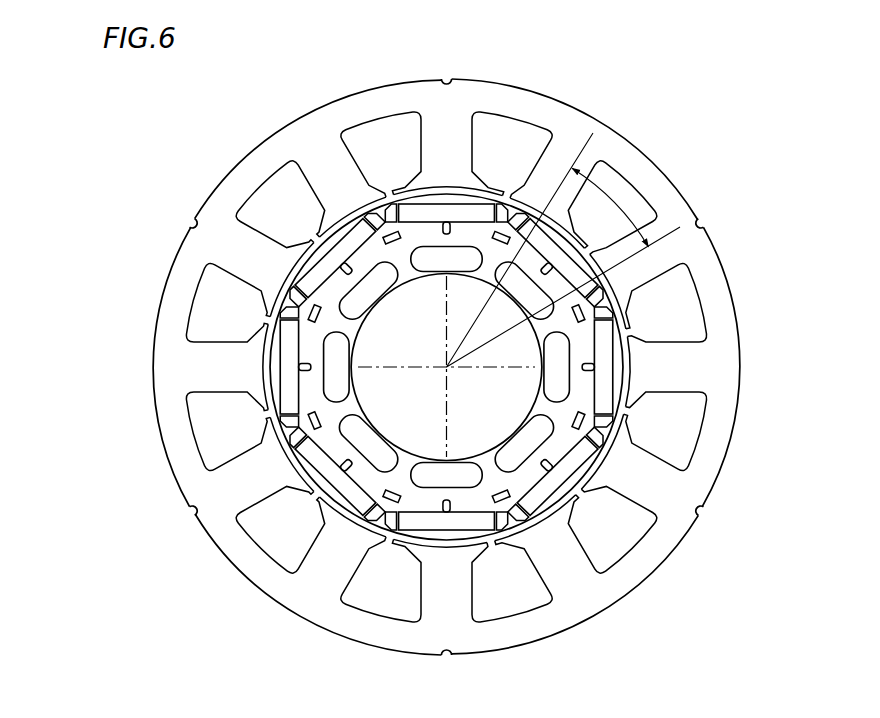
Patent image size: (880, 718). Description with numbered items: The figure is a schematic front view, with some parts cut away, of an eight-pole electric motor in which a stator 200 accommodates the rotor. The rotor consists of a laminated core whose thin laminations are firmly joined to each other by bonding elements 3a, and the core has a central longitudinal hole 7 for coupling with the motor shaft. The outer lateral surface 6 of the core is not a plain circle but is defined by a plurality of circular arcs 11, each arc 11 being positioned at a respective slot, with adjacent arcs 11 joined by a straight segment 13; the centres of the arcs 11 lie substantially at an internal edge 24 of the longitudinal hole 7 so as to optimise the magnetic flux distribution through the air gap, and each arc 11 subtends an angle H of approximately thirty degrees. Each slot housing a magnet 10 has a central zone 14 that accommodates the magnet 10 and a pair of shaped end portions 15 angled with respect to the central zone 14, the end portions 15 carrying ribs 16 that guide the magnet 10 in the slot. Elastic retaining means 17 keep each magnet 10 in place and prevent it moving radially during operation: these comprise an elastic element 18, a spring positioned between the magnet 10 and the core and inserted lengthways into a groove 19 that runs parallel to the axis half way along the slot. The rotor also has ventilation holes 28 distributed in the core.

The stator 200 is at (447, 364).
The circular arcs 11 is at (490, 451).
The shaped end portions 15 is at (223, 286).
The straight segment 13 is at (396, 397).
The lateral surface 6 is at (331, 367).
The internal edge 24 is at (583, 396).
The longitudinal hole 7 is at (564, 430).
The elastic element 18 is at (317, 345).
The magnet 10 is at (435, 368).
The ribs 16 is at (385, 205).
The central zone 14 is at (372, 524).
The ventilation holes 28 is at (414, 449).
The elastic retaining means 17 is at (447, 258).
The groove 19 is at (583, 569).
The bonding elements 3a is at (303, 374).
The angle H is at (609, 197).